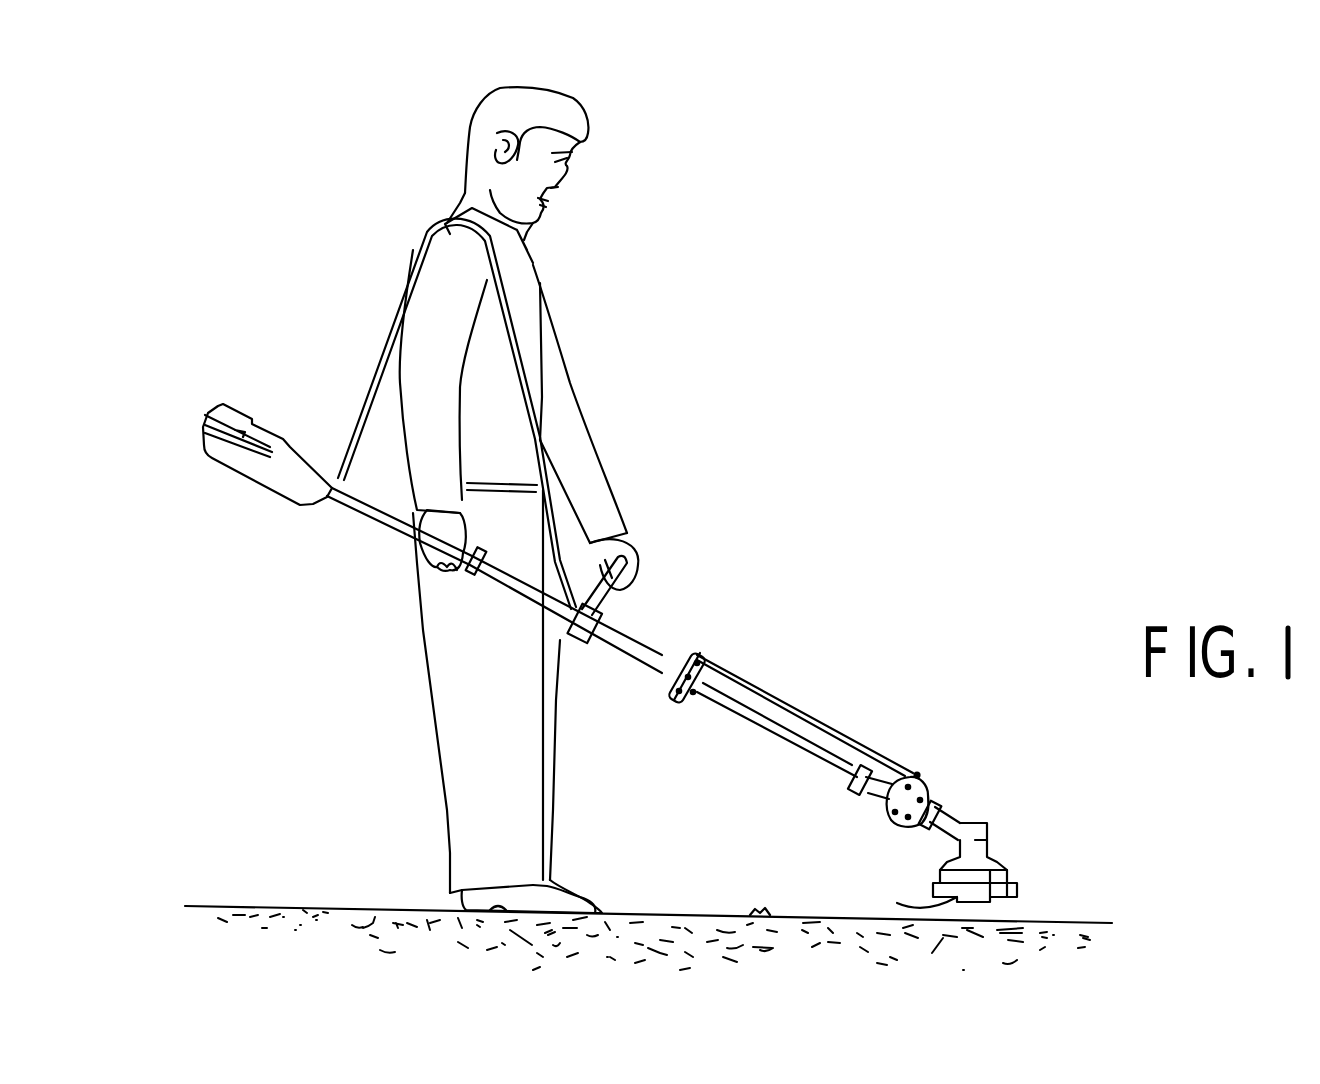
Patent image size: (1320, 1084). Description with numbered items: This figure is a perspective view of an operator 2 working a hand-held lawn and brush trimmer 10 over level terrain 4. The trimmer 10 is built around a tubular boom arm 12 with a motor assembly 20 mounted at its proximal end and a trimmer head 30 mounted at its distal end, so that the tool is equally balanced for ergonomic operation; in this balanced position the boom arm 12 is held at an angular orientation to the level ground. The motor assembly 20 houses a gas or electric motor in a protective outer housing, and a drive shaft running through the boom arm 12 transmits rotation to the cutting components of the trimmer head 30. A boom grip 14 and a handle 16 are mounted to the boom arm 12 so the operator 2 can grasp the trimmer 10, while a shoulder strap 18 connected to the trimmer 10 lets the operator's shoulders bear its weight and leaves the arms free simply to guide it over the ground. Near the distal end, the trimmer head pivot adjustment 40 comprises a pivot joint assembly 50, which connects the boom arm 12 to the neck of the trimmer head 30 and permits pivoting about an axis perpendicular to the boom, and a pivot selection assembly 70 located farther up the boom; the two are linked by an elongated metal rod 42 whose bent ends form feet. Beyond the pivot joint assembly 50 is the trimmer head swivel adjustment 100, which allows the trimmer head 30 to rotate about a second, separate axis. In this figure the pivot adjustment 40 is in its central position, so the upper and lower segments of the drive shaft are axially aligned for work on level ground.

The operator 2 is at (436, 262).
The terrain 4 is at (1067, 923).
The hand-held lawn and brush trimmer 10 is at (670, 607).
The tubular boom arm 12 is at (627, 657).
The boom grip 14 is at (466, 570).
The handle 16 is at (622, 597).
The shoulder strap 18 is at (518, 328).
The motor assembly 20 is at (308, 457).
The trimmer head 30 is at (978, 840).
The trimmer head pivot adjustment 40 is at (918, 776).
The elongated metal rod 42 is at (807, 712).
The pivot joint assembly 50 is at (903, 802).
The pivot selection assembly 70 is at (693, 704).
The trimmer head swivel adjustment 100 is at (947, 803).